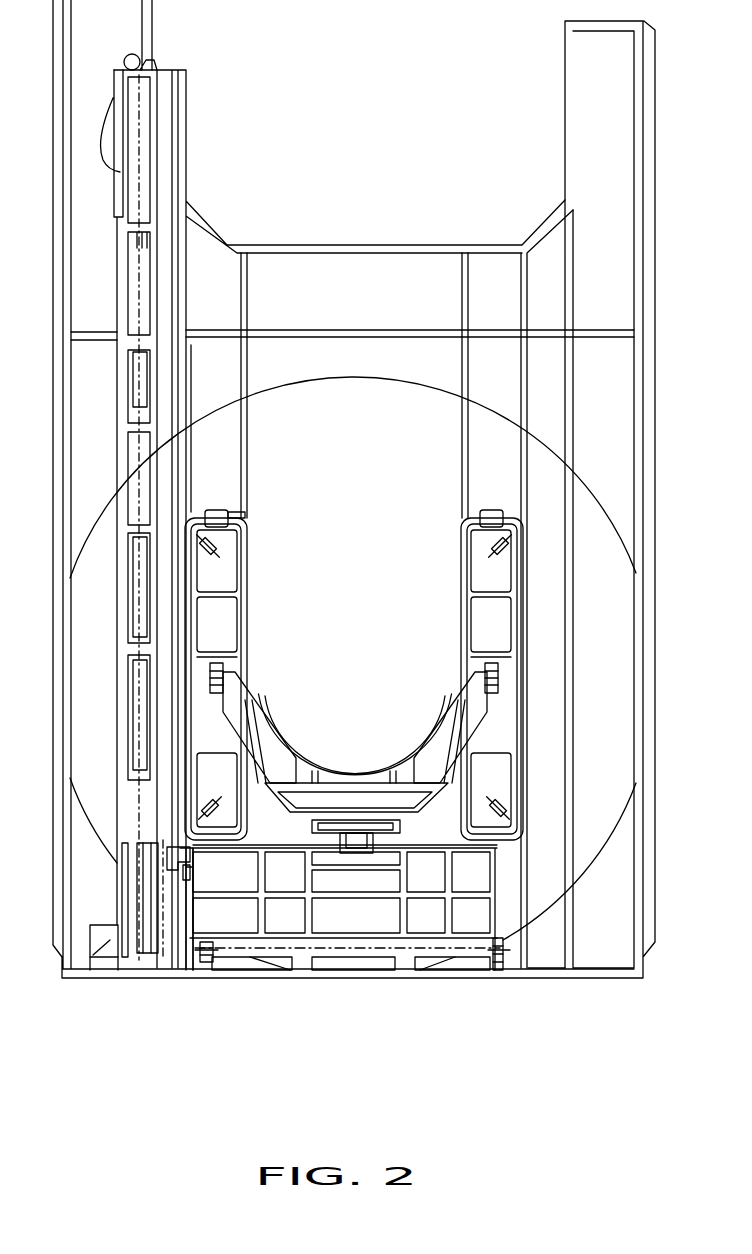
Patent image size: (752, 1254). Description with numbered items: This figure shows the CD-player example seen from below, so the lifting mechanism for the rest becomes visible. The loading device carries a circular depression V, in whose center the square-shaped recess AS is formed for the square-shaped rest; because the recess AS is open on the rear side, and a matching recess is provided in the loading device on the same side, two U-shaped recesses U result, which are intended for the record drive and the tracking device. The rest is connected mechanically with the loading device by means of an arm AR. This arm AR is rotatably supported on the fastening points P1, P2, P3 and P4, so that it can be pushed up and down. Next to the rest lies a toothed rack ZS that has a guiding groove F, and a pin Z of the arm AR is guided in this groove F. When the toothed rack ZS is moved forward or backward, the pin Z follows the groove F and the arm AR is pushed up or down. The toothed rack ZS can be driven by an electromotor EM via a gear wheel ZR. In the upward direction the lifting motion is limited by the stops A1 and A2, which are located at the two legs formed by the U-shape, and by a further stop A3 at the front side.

The U-shaped recesses U is at (378, 477).
The circular depression V is at (208, 413).
The stop A1 is at (230, 513).
The stop A2 is at (489, 508).
The stop A3 is at (357, 843).
The square-shaped recess AS is at (528, 638).
The fastening point P3 is at (210, 680).
The fastening point P4 is at (497, 682).
The fastening point P1 is at (203, 960).
The fastening point P2 is at (503, 945).
The arm AR is at (428, 912).
The pin Z is at (175, 853).
The gear wheel ZR is at (122, 920).
The toothed rack ZS is at (138, 975).
The electromotor EM is at (90, 963).
The guiding groove F is at (173, 935).